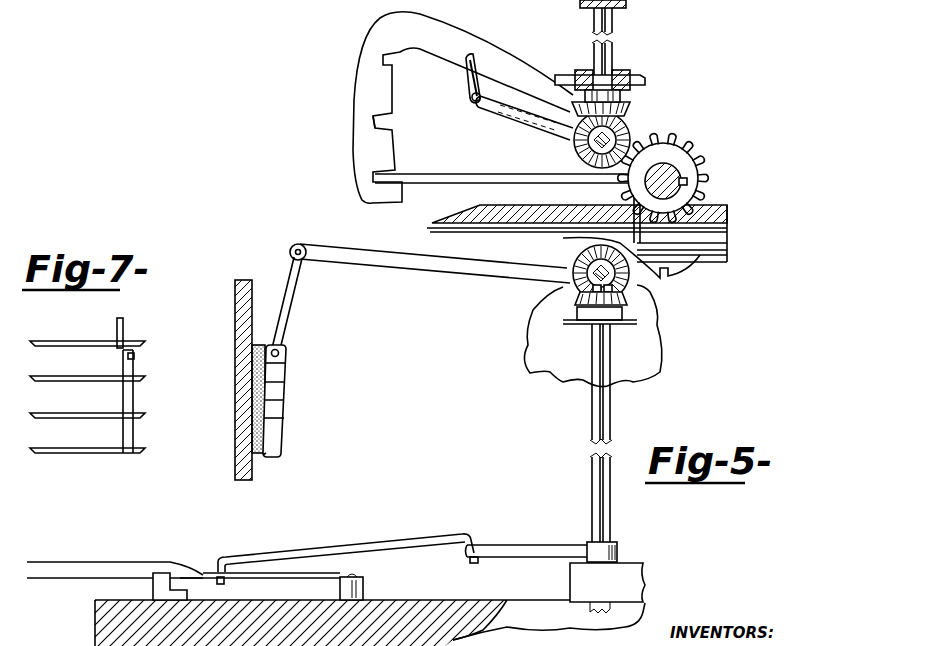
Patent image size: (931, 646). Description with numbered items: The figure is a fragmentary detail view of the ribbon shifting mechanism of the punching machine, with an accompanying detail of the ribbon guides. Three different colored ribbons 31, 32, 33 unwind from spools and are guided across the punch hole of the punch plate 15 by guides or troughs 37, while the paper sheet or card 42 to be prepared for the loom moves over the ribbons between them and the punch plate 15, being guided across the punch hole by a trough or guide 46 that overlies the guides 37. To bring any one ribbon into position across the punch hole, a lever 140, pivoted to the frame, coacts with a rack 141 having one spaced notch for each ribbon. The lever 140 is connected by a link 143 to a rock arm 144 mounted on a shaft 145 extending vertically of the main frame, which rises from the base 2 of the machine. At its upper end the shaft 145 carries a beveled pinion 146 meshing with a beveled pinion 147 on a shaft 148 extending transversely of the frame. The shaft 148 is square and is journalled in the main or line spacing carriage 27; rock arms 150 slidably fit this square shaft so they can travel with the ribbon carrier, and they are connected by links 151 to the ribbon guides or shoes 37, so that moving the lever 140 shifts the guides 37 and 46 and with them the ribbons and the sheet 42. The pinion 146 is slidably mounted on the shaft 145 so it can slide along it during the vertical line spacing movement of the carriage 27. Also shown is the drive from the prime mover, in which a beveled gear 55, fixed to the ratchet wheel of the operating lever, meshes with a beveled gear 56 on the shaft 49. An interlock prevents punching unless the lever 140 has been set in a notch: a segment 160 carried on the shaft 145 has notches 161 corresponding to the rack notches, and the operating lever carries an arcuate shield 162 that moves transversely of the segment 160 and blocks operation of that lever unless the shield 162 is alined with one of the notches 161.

In FIG. 5, the base 2 is at (418, 612).
In FIG. 5, the punch plate 15 is at (222, 240).
In FIG. 5, the main or line spacing carriage 27 is at (655, 80).
In FIG. 5, the ribbon 31 is at (282, 435).
In FIG. 5, the ribbon 32 is at (282, 402).
In FIG. 5, the ribbon 33 is at (288, 366).
In FIG. 7, the guides or troughs 37 is at (145, 414).
In FIG. 5, the guides or troughs 37 is at (280, 404).
In FIG. 5, the paper sheet or card 42 is at (256, 386).
In FIG. 7, the trough or guide 46 is at (108, 342).
In FIG. 5, the trough or guide 46 is at (268, 356).
In FIG. 5, the shaft 49 is at (688, 183).
In FIG. 5, the beveled gear 55 is at (455, 214).
In FIG. 5, the beveled gear 56 is at (703, 152).
In FIG. 5, the lever 140 is at (90, 568).
In FIG. 5, the rack 141 is at (145, 580).
In FIG. 5, the link 143 is at (472, 88).
In FIG. 5, the rock arm 144 is at (495, 112).
In FIG. 5, the shaft 145 is at (598, 148).
In FIG. 5, the beveled pinion 146 is at (632, 128).
In FIG. 5, the beveled pinion 147 is at (630, 108).
In FIG. 5, the shaft 148 is at (606, 48).
In FIG. 5, the rock arm 150 is at (412, 283).
In FIG. 7, the link 151 is at (126, 330).
In FIG. 5, the link 151 is at (288, 282).
In FIG. 5, the segment 160 is at (360, 88).
In FIG. 5, the notch 161 is at (372, 122).
In FIG. 5, the arcuate shield 162 is at (540, 166).